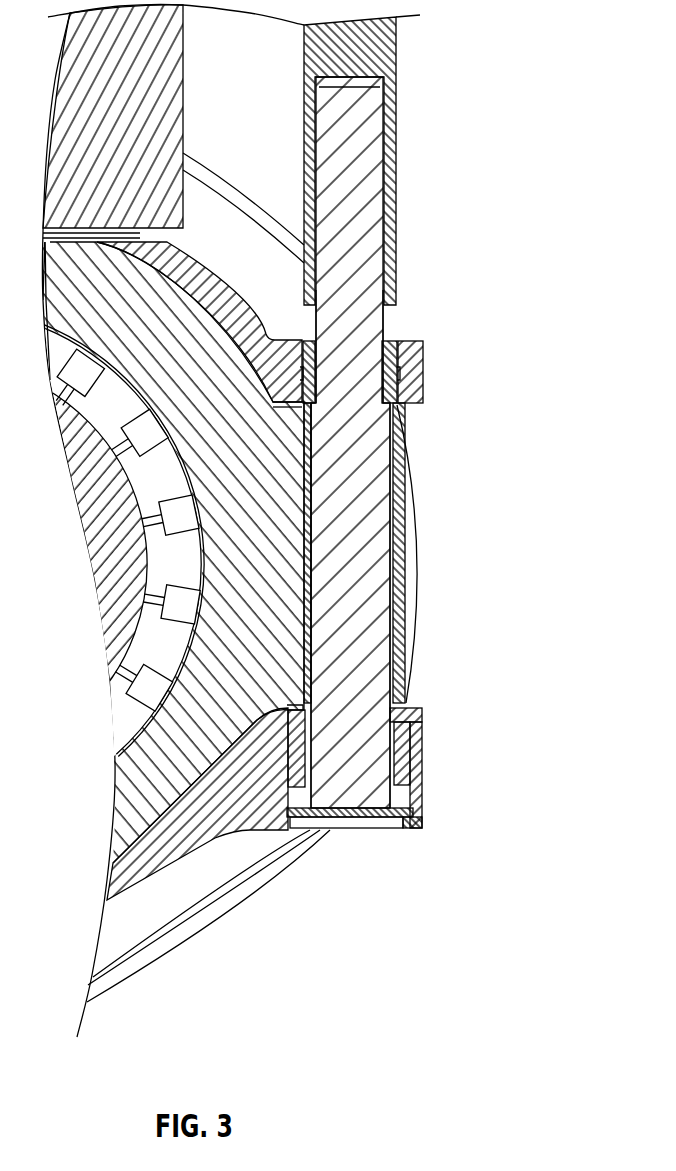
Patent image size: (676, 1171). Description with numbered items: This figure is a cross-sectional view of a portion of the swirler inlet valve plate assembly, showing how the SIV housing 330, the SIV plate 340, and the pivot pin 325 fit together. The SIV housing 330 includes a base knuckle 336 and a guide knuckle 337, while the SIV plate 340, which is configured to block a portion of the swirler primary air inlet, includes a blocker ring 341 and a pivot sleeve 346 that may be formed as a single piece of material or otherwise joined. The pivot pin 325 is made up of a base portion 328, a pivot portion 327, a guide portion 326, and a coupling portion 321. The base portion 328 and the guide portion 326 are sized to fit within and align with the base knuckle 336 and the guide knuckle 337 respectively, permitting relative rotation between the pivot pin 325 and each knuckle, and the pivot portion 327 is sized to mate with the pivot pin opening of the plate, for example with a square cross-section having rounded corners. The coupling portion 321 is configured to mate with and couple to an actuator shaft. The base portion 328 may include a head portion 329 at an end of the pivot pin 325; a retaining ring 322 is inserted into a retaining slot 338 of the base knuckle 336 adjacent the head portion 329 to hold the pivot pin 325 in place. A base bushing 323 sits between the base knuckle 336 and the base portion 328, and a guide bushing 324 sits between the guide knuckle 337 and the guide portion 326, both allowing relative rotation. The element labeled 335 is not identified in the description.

The coupling portion 321 is at (367, 135).
The retaining ring 322 is at (403, 830).
The base bushing 323 is at (410, 767).
The guide bushing 324 is at (415, 397).
The pivot pin 325 is at (368, 325).
The guide portion 326 is at (355, 368).
The pivot portion 327 is at (370, 503).
The base portion 328 is at (380, 740).
The head portion 329 is at (410, 800).
The SIV housing 330 is at (180, 263).
The housing cap 335 is at (385, 62).
The base knuckle 336 is at (415, 792).
The guide knuckle 337 is at (417, 387).
The retaining slot 338 is at (417, 832).
The SIV plate 340 is at (307, 645).
The blocker ring 341 is at (143, 797).
The pivot sleeve 346 is at (398, 555).